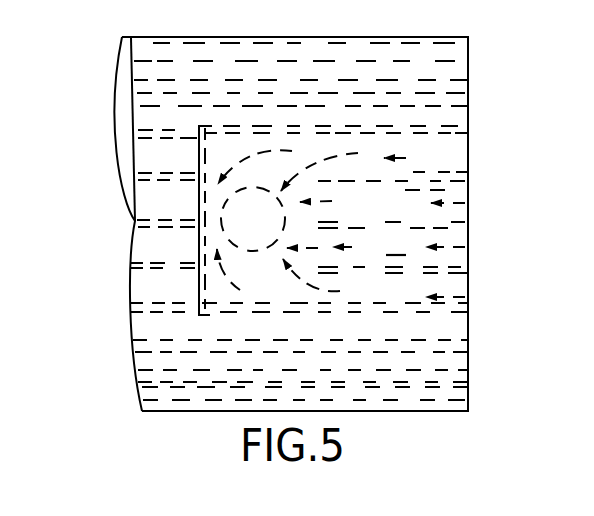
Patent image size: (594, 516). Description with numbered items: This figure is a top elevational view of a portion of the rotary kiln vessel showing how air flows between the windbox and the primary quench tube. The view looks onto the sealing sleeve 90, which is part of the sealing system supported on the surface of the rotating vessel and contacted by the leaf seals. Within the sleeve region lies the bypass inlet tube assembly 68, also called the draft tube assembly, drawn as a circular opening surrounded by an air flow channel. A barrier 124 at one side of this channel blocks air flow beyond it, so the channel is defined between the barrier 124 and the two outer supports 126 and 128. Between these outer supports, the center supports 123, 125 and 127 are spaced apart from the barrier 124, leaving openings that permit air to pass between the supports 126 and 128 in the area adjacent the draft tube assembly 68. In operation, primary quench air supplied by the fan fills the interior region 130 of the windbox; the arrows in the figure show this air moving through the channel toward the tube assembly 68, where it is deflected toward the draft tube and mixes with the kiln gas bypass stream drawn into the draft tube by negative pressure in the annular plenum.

The sealing sleeve 90 is at (303, 70).
The bypass inlet tube assembly 68 is at (236, 214).
The barrier 124 is at (198, 284).
The interior region 130 is at (408, 157).
The support 126 is at (450, 137).
The center support 123 is at (460, 178).
The center support 125 is at (460, 222).
The center support 127 is at (458, 272).
The support 128 is at (452, 320).